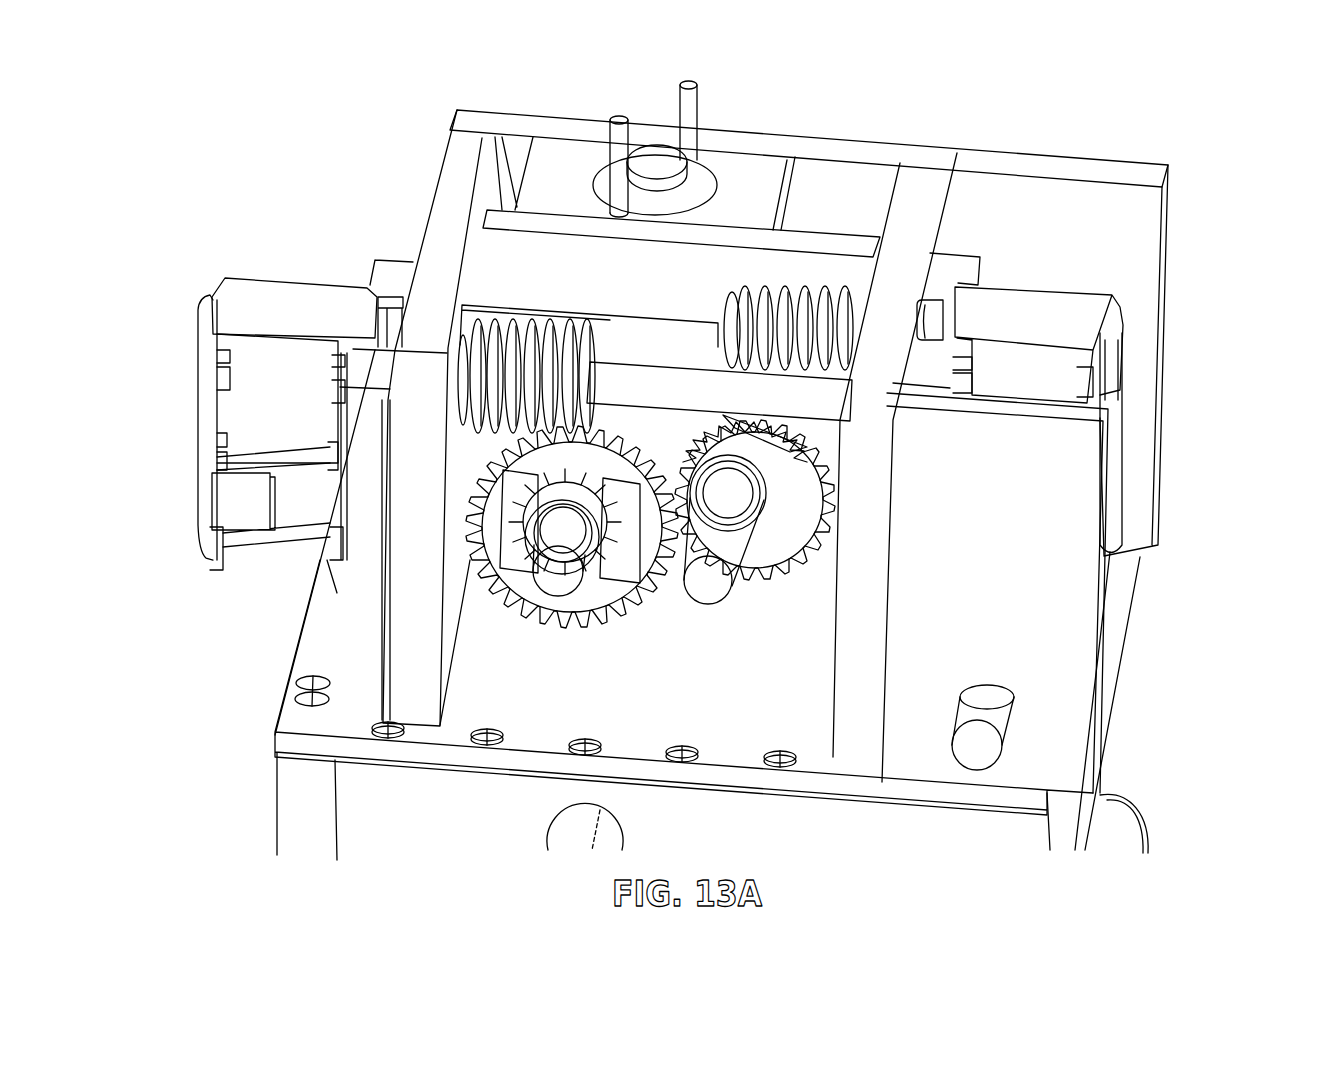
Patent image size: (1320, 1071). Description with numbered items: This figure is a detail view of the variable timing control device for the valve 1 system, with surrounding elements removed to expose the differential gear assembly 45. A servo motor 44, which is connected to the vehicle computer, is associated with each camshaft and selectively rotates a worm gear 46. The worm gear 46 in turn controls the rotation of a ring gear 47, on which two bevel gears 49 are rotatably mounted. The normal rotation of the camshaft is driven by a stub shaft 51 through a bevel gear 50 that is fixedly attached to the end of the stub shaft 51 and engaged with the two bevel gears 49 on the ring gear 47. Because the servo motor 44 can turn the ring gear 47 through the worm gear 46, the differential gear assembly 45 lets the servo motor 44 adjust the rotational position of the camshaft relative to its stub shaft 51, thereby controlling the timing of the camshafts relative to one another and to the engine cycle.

The valve 1 is at (633, 98).
The servo motor 44 is at (193, 420).
The differential gear assembly 45 is at (655, 657).
The worm gear 46 is at (513, 323).
The ring gear 47 is at (520, 598).
The bevel gears 49 is at (757, 541).
The bevel gear 50 is at (567, 490).
The stub shaft 51 is at (557, 587).